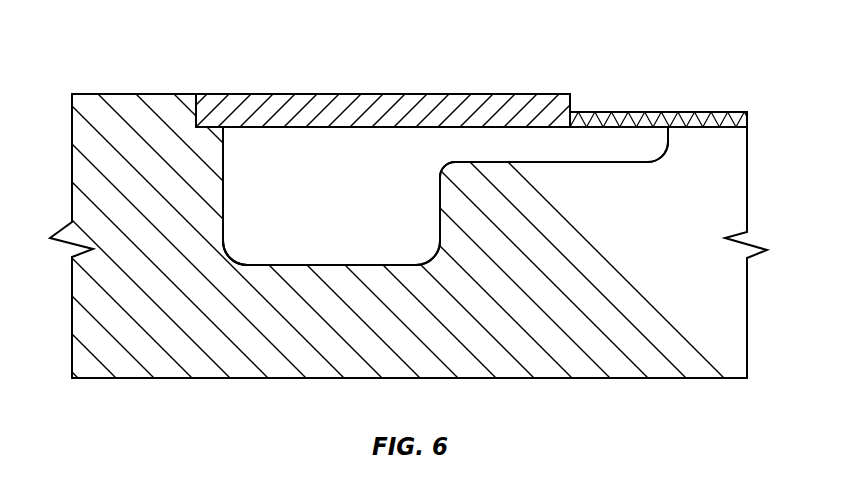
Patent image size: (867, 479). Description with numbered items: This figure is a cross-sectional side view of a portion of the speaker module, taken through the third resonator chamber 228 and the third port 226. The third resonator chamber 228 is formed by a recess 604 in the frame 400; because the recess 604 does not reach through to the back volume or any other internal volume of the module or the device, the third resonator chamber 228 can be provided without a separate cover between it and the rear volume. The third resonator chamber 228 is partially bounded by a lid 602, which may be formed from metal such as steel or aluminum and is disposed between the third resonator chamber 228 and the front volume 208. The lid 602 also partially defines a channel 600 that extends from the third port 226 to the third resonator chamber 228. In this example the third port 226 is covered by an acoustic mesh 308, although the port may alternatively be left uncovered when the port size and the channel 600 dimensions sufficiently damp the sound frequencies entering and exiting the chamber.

The frame 400 is at (578, 285).
The front volume 208 is at (504, 75).
The lid 602 is at (412, 100).
The acoustic mesh 308 is at (607, 112).
The third port 226 is at (581, 92).
The channel 600 is at (594, 153).
The third resonator chamber 228 is at (341, 223).
The recess 604 is at (275, 184).